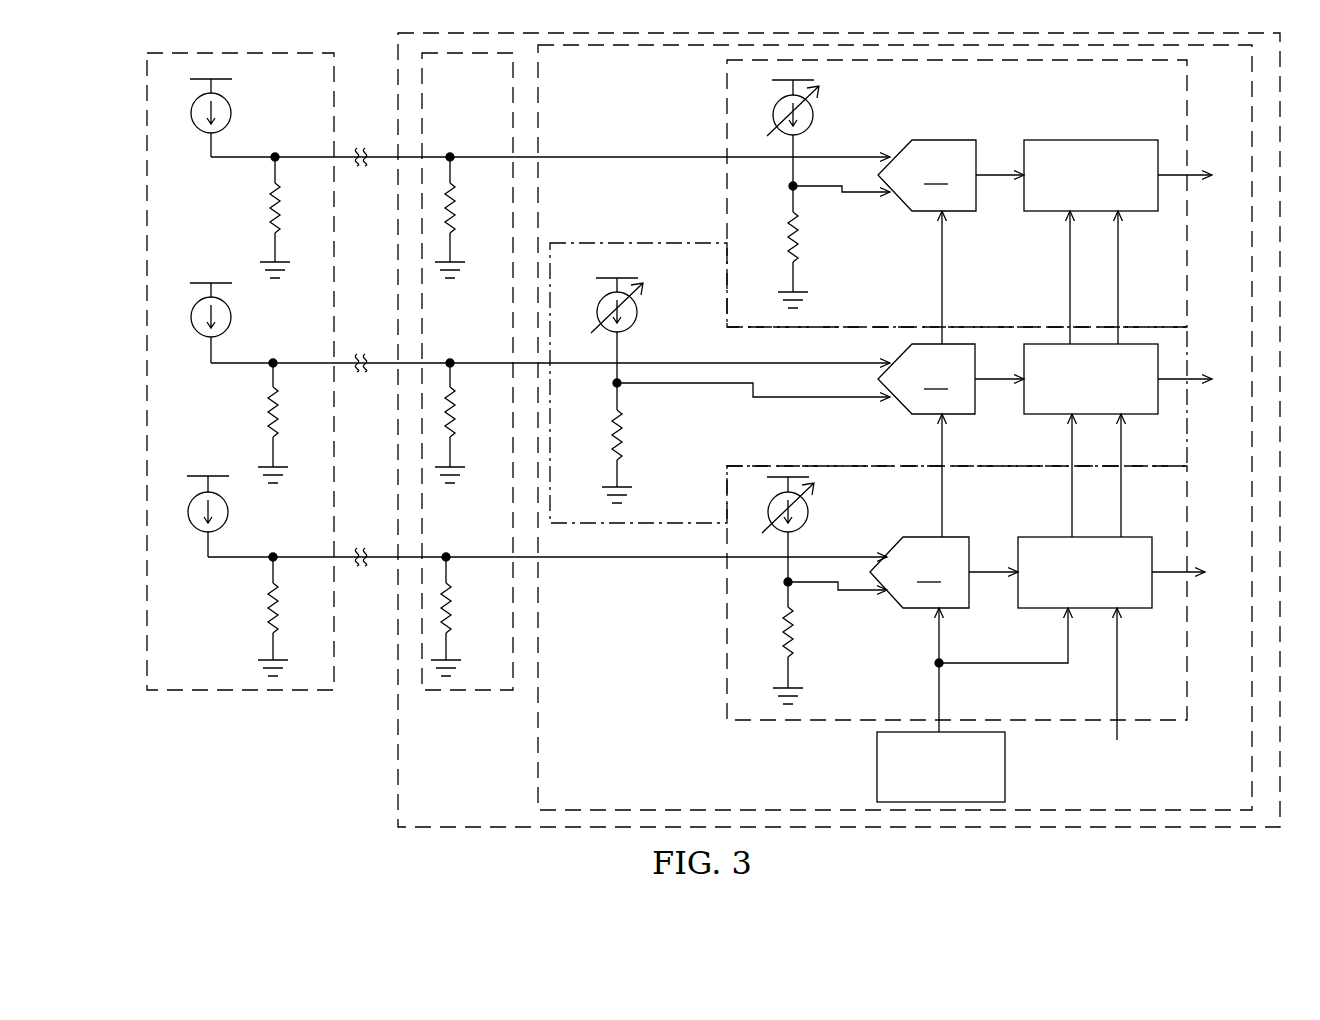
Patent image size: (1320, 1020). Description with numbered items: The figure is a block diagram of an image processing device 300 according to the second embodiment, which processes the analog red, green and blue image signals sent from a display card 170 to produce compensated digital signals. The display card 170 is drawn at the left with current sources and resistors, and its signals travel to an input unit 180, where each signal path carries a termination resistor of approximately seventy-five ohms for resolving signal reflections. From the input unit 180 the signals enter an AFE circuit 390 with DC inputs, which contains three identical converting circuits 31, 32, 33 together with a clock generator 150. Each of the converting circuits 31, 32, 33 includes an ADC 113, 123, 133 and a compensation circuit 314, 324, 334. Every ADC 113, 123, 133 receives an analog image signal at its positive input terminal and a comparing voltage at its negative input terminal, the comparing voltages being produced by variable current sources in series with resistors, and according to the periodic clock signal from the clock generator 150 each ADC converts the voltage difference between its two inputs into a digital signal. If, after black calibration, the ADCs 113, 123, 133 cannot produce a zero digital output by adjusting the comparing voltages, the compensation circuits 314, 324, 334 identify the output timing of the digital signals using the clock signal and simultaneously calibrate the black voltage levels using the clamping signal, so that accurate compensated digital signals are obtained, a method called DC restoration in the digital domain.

The image processing device 300 is at (396, 749).
The display card 170 is at (213, 692).
The input unit 180 is at (512, 692).
The AFE circuit with DC inputs 390 is at (538, 790).
The converting circuit 31 is at (988, 202).
The converting circuit 32 is at (900, 390).
The converting circuit 33 is at (987, 593).
The ADC 113 is at (927, 175).
The ADC 123 is at (926, 379).
The ADC 133 is at (919, 572).
The compensation circuit 314 is at (1157, 212).
The compensation circuit 324 is at (1157, 415).
The compensation circuit 334 is at (1150, 609).
The clock generator 150 is at (1005, 770).